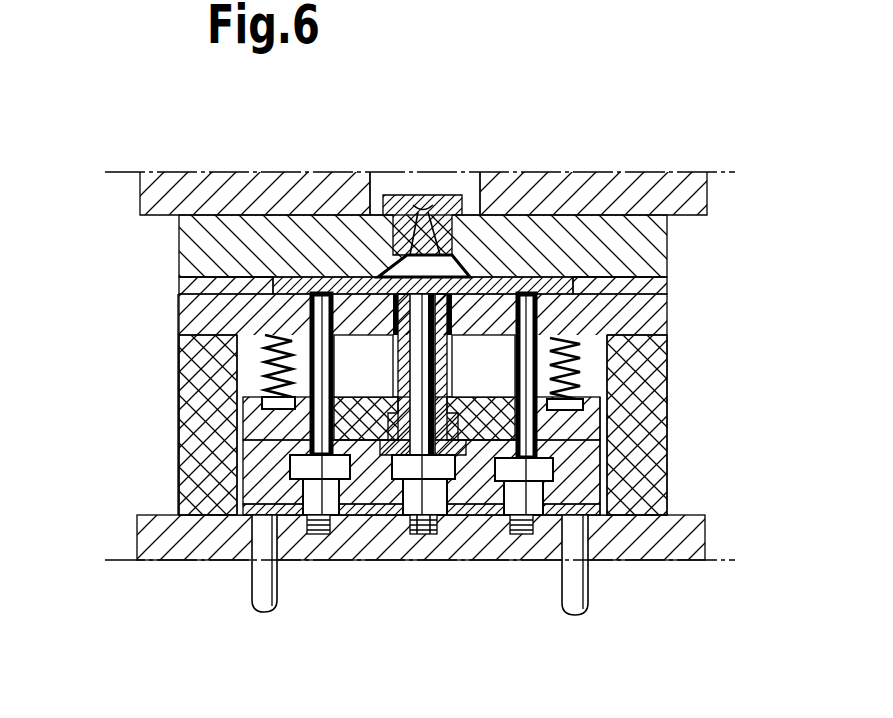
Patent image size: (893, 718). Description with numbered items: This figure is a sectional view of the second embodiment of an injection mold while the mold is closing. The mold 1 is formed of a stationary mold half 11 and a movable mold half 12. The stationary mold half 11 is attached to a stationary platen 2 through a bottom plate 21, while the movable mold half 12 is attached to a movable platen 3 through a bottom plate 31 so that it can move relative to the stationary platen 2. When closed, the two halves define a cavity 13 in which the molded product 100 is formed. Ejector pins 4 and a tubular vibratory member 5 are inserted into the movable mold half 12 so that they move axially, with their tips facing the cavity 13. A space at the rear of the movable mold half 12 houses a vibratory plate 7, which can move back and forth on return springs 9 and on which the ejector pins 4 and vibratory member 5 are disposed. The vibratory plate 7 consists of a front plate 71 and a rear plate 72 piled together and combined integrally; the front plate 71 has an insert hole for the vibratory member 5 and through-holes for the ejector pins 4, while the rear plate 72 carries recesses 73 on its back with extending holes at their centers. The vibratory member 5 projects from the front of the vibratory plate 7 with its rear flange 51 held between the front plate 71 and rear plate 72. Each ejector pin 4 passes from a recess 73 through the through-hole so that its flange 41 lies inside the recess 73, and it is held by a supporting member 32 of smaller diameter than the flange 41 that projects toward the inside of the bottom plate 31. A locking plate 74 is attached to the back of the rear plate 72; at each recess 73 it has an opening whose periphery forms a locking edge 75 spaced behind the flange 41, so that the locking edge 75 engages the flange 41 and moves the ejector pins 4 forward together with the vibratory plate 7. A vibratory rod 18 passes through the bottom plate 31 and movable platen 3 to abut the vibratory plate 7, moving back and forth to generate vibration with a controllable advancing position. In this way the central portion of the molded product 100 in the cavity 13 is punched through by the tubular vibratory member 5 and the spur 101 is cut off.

The mold 1 is at (150, 372).
The stationary platen 2 is at (118, 172).
The movable platen 3 is at (118, 552).
The ejector pin 4 is at (407, 360).
The vibratory member 5 is at (450, 352).
The vibratory plate 7 is at (243, 466).
The return spring 9 is at (262, 373).
The stationary mold half 11 is at (223, 243).
The movable mold half 12 is at (200, 357).
The cavity 13 is at (270, 302).
The vibratory rod 18 is at (256, 583).
The bottom plate 21 is at (242, 186).
The bottom plate 31 is at (173, 545).
The supporting member 32 is at (398, 530).
The flange 41 is at (540, 470).
The flange 51 is at (333, 520).
The front plate 71 is at (243, 420).
The rear plate 72 is at (248, 487).
The recess 73 is at (390, 470).
The locking plate 74 is at (600, 512).
The locking edge 75 is at (445, 525).
The molded product 100 is at (513, 278).
The spur 101 is at (436, 253).